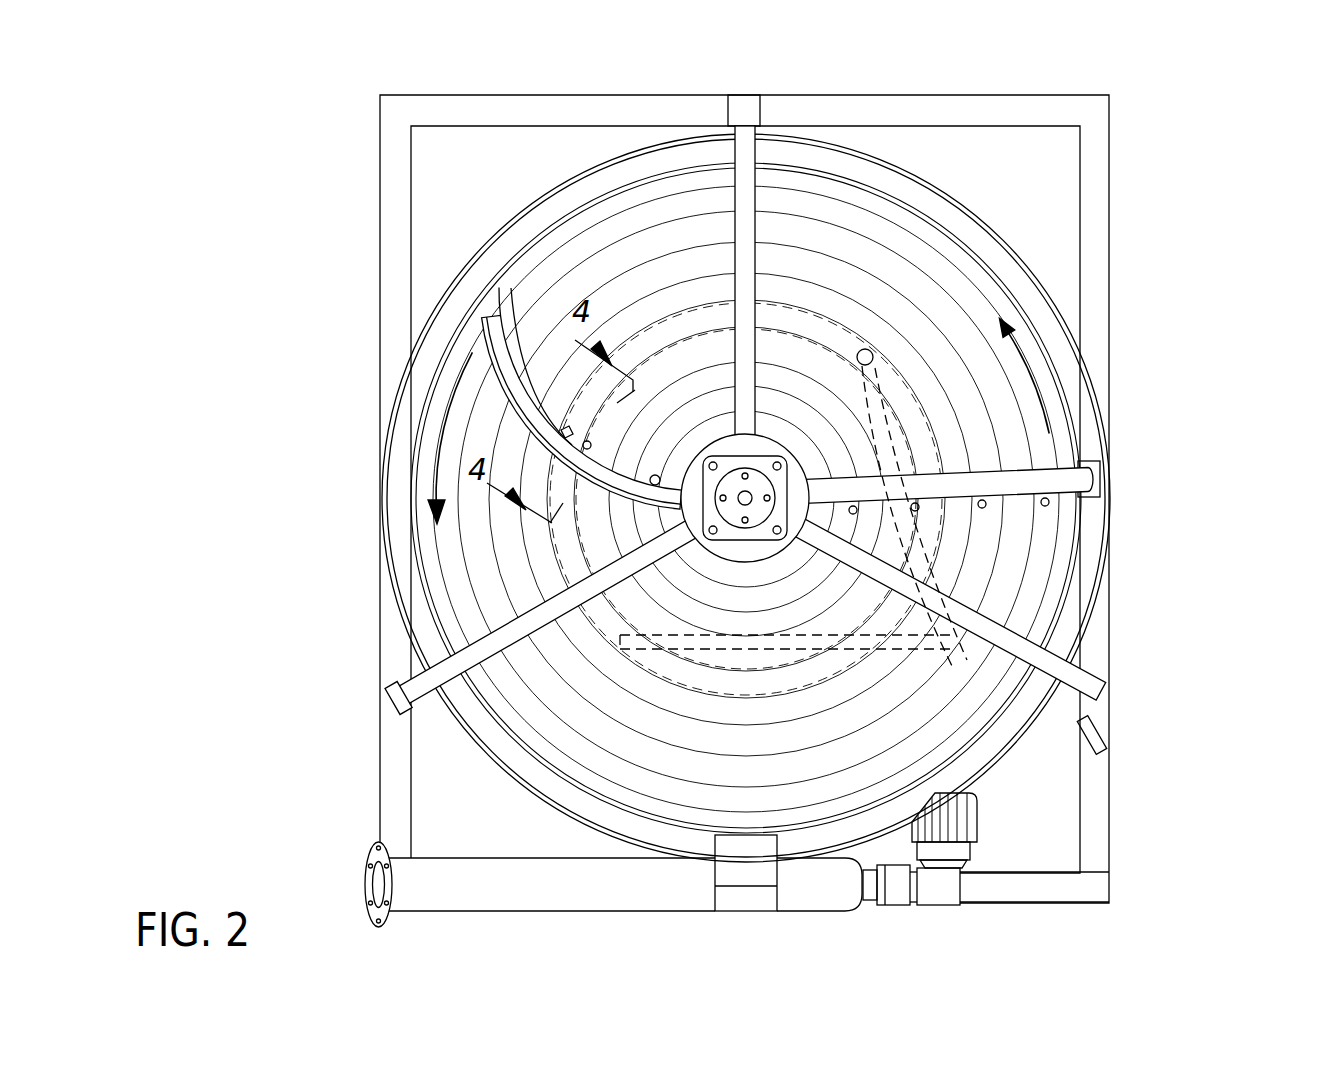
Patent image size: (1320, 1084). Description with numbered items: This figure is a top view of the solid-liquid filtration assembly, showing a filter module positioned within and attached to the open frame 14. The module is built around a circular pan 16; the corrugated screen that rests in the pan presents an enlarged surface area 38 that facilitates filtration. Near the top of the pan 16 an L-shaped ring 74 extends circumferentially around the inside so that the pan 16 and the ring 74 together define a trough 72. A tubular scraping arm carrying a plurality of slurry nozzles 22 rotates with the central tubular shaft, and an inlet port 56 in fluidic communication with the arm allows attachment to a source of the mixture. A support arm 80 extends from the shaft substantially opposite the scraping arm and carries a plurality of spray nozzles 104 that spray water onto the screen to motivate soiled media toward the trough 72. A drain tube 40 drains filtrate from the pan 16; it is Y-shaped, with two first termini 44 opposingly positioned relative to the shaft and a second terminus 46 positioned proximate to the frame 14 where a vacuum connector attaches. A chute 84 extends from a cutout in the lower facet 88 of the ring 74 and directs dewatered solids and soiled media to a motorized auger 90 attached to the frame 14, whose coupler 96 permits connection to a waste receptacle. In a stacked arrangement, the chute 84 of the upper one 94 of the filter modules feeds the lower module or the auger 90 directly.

The frame 14 is at (398, 643).
The pan 16 is at (817, 498).
The slurry nozzles 22 is at (655, 475).
The surface area 38 is at (906, 282).
The drain tube 40 is at (1060, 713).
The first terminus 44 is at (872, 350).
The second terminus 46 is at (1095, 713).
The inlet port 56 is at (748, 494).
The trough 72 is at (1048, 338).
The ring 74 is at (1053, 377).
The support arm 80 is at (1067, 480).
The chute 84 is at (745, 873).
The lower facet 88 is at (1065, 623).
The motorized auger 90 is at (825, 898).
The upper one of the filter modules 94 is at (1097, 592).
The coupler 96 is at (363, 877).
The spray nozzles 104 is at (985, 507).